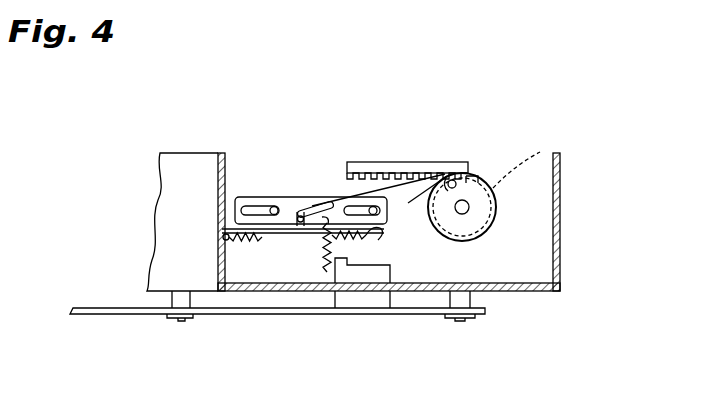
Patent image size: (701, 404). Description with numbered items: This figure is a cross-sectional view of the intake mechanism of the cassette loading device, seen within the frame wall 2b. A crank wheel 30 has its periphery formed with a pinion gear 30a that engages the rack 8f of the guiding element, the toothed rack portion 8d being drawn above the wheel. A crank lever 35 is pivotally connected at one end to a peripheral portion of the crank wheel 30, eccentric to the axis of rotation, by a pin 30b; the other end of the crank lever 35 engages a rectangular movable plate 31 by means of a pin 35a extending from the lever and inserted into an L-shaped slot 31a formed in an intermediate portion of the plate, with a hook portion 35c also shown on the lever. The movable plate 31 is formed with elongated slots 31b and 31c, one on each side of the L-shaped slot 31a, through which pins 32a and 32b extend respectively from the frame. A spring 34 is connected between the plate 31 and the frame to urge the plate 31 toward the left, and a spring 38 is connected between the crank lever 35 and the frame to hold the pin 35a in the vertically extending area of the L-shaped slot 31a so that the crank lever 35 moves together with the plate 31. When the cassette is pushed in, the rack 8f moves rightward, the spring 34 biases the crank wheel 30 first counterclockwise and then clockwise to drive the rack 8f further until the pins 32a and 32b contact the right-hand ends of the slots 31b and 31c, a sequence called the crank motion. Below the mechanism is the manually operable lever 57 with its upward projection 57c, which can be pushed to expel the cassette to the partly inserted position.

The housing 2b is at (560, 222).
The rack 8d is at (402, 165).
The rack 8f is at (440, 172).
The crank wheel 30 is at (491, 207).
The pinion gear 30a is at (474, 174).
The pin 30b is at (540, 152).
The rectangular movable plate 31 is at (233, 216).
The L-shaped slot 31a is at (313, 202).
The elongated slot 31b is at (240, 192).
The elongated slot 31c is at (347, 198).
The pin 32a is at (277, 195).
The pin 32b is at (374, 206).
The spring 34 is at (228, 237).
The crank lever 35 is at (408, 203).
The pin 35a is at (300, 219).
The spring hook 35c is at (380, 238).
The spring 38 is at (320, 258).
The manually operable lever 57 is at (130, 314).
The upward projection 57c is at (366, 300).